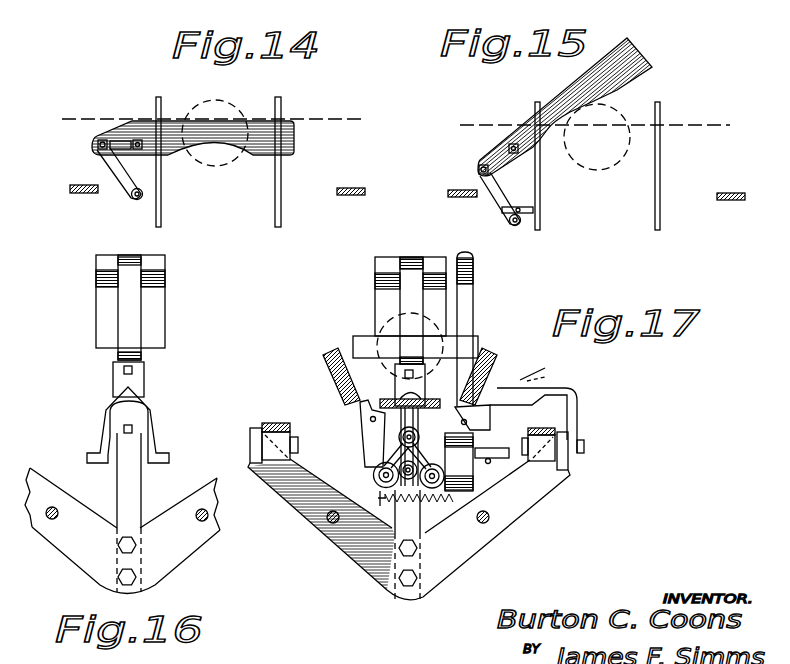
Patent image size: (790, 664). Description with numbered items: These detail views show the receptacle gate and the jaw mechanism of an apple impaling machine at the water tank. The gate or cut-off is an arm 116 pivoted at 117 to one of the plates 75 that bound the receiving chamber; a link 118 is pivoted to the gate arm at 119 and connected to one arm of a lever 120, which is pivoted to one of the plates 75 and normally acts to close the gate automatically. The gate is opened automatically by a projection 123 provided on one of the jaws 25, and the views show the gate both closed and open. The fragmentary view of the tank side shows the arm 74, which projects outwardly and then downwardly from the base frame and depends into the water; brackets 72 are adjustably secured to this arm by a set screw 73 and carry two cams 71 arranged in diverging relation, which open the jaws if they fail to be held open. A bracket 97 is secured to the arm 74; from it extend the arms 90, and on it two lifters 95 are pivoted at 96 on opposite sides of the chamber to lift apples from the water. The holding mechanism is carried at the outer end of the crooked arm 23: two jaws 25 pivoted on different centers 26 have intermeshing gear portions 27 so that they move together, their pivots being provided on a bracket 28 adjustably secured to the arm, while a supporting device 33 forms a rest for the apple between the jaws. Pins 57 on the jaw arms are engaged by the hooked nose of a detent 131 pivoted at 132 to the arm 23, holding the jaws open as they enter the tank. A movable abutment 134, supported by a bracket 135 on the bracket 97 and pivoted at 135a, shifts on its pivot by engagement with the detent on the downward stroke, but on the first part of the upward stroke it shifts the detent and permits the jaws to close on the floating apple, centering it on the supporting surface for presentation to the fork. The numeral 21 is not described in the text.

In FIG. 17, the frame head 21 is at (421, 394).
In FIG. 17, the arm 23 is at (473, 298).
In FIG. 17, the jaws 25 is at (332, 366).
In FIG. 17, the pivot centers 26 is at (378, 478).
In FIG. 17, the intermeshing gear portions 27 is at (424, 545).
In FIG. 17, the bracket 28 is at (448, 452).
In FIG. 17, the supporting device 33 is at (384, 399).
In FIG. 17, the pins 57 is at (372, 422).
In FIG. 16, the cams 71 is at (107, 405).
In FIG. 16, the brackets 72 is at (146, 384).
In FIG. 16, the set screw 73 is at (122, 368).
In FIG. 16, the arm 74 is at (130, 308).
In FIG. 17, the arm 74 is at (410, 289).
In FIG. 14, the plates 75 is at (172, 193).
In FIG. 15, the plates 75 is at (663, 157).
In FIG. 16, the arms 90 is at (52, 519).
In FIG. 17, the arms 90 is at (482, 523).
In FIG. 14, the lifters 95 is at (355, 180).
In FIG. 15, the lifters 95 is at (737, 180).
In FIG. 17, the lifters 95 is at (284, 423).
In FIG. 17, the pivot 96 is at (305, 440).
In FIG. 16, the bracket 97 is at (213, 526).
In FIG. 17, the bracket 97 is at (252, 506).
In FIG. 14, the gate arm 116 is at (290, 116).
In FIG. 15, the gate arm 116 is at (634, 53).
In FIG. 14, the pivot 117 is at (134, 139).
In FIG. 15, the pivot 117 is at (510, 143).
In FIG. 14, the link 118 is at (112, 168).
In FIG. 15, the link 118 is at (506, 204).
In FIG. 14, the pivot 119 is at (96, 144).
In FIG. 15, the pivot 119 is at (476, 168).
In FIG. 14, the lever 120 is at (131, 198).
In FIG. 15, the lever 120 is at (516, 226).
In FIG. 17, the lever 120 is at (456, 500).
In FIG. 15, the projection 123 is at (503, 210).
In FIG. 17, the projection 123 is at (525, 470).
In FIG. 17, the detent 131 is at (498, 425).
In FIG. 17, the detent pivot 132 is at (476, 410).
In FIG. 17, the movable abutment 134 is at (546, 378).
In FIG. 17, the bracket 135 is at (580, 401).
In FIG. 17, the abutment pivot 135a is at (546, 368).